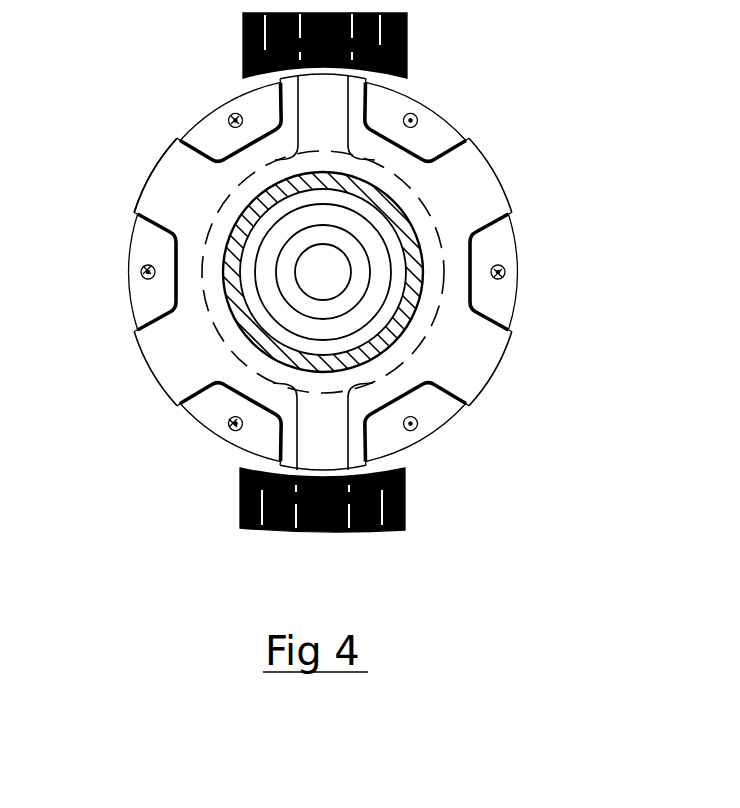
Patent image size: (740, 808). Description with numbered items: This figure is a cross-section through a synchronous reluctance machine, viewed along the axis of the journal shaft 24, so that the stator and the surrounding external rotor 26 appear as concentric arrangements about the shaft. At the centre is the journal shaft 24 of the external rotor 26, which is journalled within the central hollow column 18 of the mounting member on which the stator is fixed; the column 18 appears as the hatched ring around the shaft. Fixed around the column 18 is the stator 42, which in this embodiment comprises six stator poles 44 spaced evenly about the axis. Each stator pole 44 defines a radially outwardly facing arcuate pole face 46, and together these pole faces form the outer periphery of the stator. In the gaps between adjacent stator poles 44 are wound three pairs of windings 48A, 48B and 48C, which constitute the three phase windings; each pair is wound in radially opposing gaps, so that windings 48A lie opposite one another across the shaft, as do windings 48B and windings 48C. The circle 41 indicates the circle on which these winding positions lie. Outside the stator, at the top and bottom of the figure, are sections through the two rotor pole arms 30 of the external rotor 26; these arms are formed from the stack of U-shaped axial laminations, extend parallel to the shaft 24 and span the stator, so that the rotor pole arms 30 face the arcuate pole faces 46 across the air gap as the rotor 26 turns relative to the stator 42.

The central hollow column 18 is at (240, 256).
The journal shaft 24 is at (338, 286).
The external rotor 26 is at (408, 524).
The rotor pole arm 30 is at (405, 25).
The pitch circle 41 is at (203, 300).
The stator 42 is at (513, 158).
The stator pole 44 is at (163, 160).
The arcuate pole face 46 is at (140, 170).
The first pair of windings 48A is at (513, 290).
The second pair of windings 48B is at (438, 120).
The third pair of windings 48C is at (213, 116).